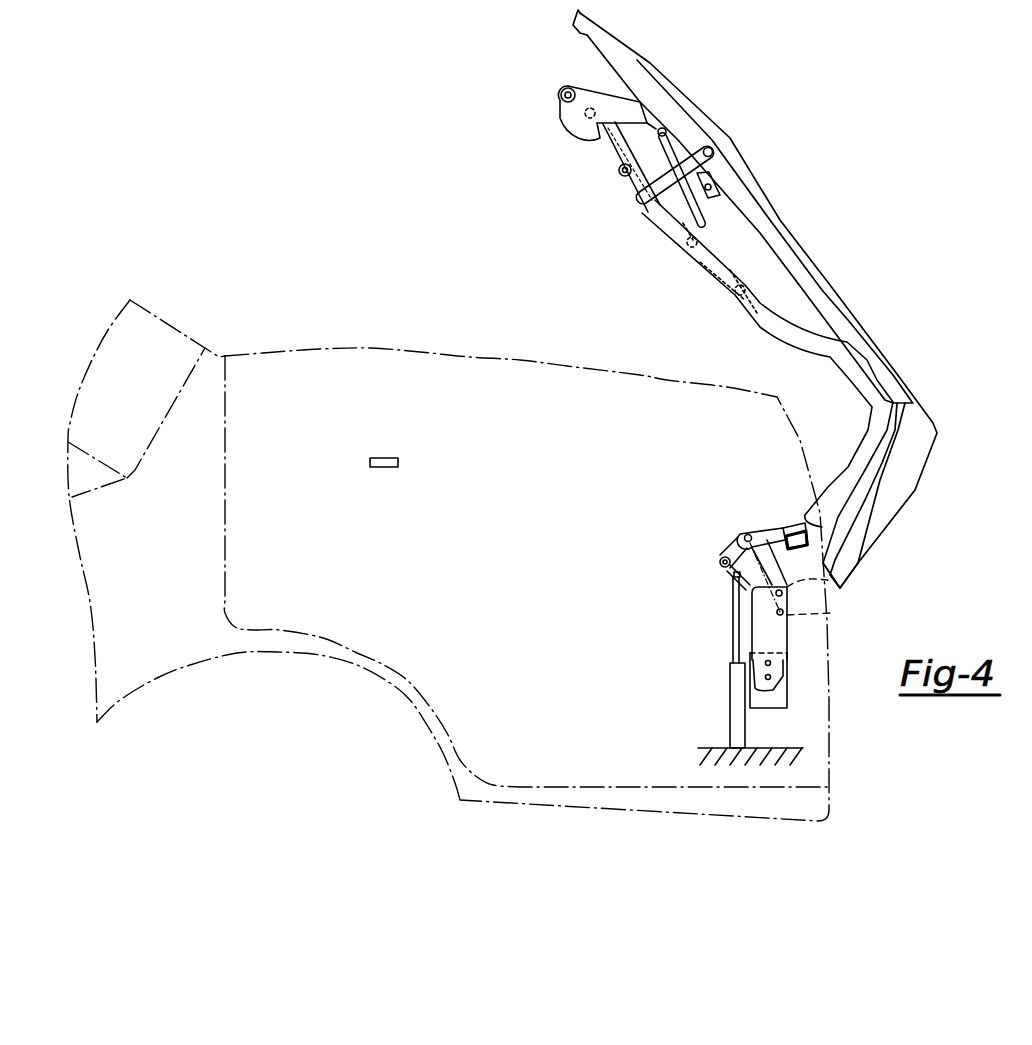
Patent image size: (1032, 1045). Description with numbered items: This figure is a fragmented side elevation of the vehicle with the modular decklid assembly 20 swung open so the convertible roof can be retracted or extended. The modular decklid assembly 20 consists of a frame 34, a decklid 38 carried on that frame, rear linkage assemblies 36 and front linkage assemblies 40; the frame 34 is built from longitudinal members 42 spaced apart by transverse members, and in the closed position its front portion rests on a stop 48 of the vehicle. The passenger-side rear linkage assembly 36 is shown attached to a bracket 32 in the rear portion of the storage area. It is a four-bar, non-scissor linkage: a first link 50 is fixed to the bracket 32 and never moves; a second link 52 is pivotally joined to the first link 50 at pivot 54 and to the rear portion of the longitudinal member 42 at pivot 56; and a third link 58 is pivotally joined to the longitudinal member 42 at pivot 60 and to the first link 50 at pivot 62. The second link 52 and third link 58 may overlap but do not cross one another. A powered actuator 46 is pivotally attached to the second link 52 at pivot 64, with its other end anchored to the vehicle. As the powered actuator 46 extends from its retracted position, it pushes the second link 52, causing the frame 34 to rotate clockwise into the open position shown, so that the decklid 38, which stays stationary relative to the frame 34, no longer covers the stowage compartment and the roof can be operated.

The modular decklid assembly 20 is at (848, 208).
The bracket 32 is at (780, 692).
The frame 34 is at (693, 297).
The rear linkage assembly 36 is at (652, 528).
The decklid 38 is at (580, 35).
The front linkage assembly 40 is at (603, 180).
The longitudinal member 42 is at (762, 528).
The powered actuator 46 is at (733, 680).
The stop 48 is at (382, 457).
The first link 50 is at (770, 633).
The second link 52 is at (720, 577).
The pivot 54 is at (830, 590).
The pivot 56 is at (727, 562).
The third link 58 is at (762, 567).
The pivot 60 is at (748, 530).
The pivot 62 is at (848, 577).
The pivot 64 is at (732, 580).